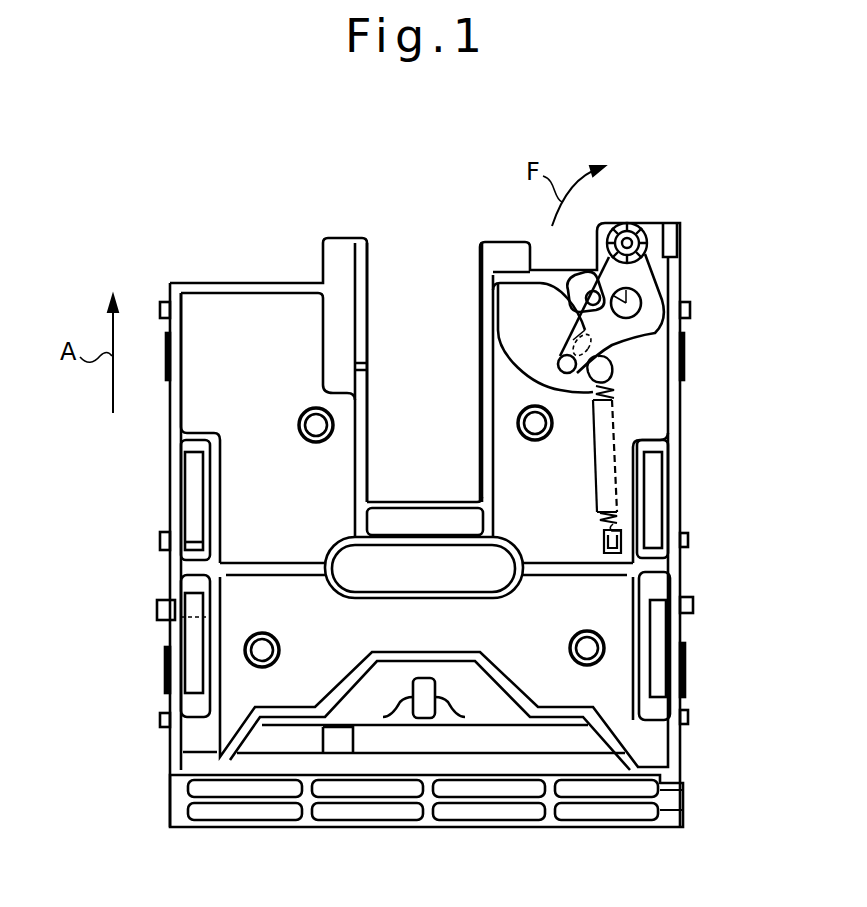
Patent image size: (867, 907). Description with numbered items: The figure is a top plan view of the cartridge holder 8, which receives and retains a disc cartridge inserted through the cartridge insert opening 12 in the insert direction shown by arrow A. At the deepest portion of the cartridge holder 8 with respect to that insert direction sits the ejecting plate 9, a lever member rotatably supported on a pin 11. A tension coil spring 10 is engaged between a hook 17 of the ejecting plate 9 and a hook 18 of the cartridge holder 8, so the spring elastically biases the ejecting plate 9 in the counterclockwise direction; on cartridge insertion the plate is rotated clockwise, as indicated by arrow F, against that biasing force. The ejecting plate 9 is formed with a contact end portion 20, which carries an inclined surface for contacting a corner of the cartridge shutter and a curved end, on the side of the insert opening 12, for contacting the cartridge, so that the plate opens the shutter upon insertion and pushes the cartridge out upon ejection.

The cartridge holder 8 is at (238, 308).
The ejecting plate 9 is at (650, 293).
The tension coil spring 10 is at (597, 521).
The pin 11 is at (633, 226).
The cartridge insert opening 12 is at (463, 829).
The hook of the ejecting plate 17 is at (616, 361).
The hook of the cartridge holder 18 is at (624, 542).
The contact end portion 20 is at (562, 356).